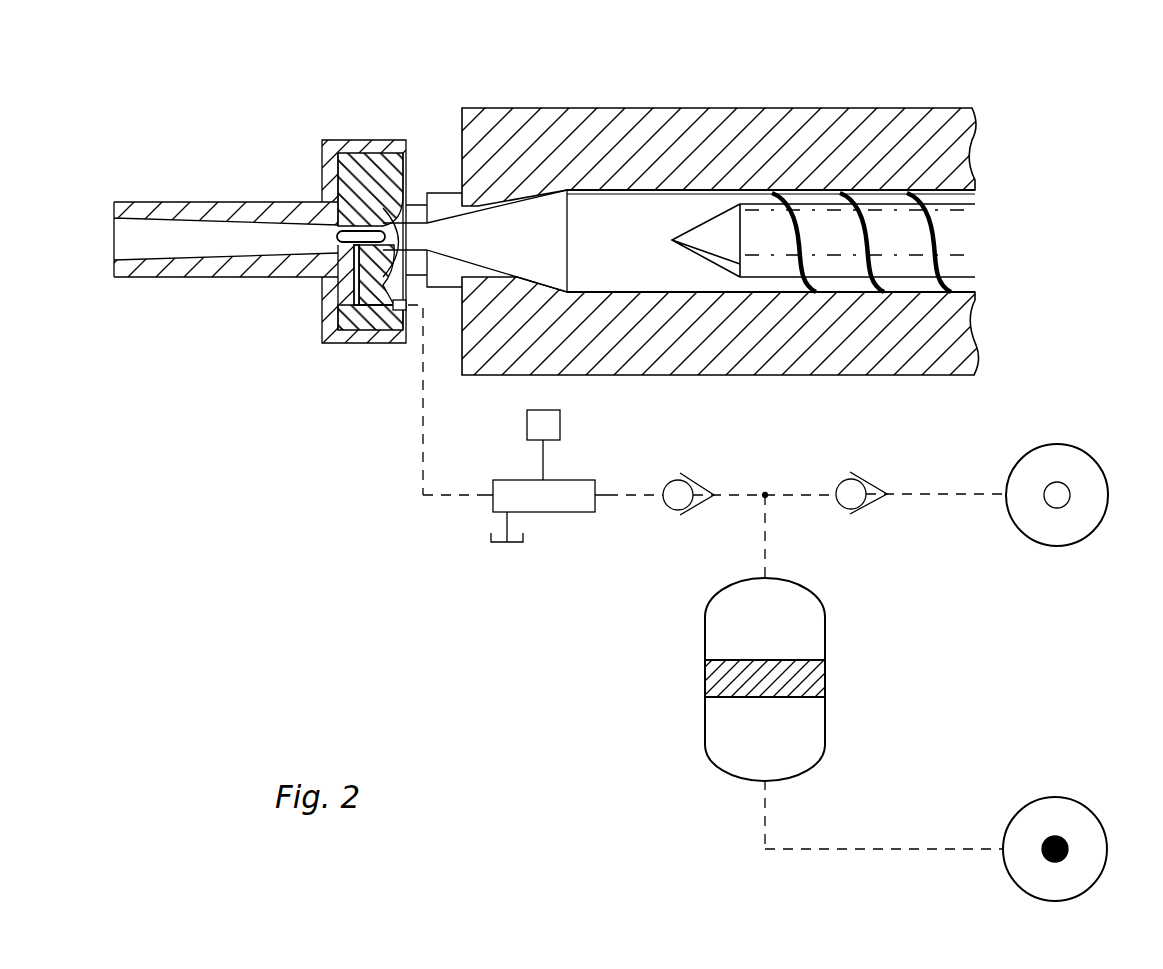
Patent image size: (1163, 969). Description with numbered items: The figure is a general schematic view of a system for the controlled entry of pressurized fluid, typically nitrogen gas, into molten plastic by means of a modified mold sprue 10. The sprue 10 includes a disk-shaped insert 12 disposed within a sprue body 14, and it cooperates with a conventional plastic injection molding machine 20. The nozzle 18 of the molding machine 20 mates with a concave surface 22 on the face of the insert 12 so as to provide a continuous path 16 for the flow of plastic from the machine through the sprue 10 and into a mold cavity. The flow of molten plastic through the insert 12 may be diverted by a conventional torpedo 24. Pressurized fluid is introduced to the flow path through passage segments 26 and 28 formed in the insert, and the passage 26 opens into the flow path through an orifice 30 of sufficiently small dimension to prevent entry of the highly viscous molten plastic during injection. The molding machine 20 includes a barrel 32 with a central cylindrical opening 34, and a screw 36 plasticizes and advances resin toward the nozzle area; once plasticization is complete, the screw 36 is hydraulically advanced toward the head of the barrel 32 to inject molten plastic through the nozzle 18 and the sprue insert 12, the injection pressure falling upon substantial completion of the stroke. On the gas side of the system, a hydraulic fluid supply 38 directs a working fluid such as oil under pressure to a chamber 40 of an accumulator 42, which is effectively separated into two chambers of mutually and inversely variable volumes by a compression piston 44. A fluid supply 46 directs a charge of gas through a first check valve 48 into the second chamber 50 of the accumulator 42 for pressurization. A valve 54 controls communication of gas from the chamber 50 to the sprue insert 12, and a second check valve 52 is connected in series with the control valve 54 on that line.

The mold sprue 10 is at (362, 92).
The insert 12 is at (407, 153).
The sprue body 14 is at (322, 148).
The continuous path 16 is at (233, 240).
The nozzle 18 is at (412, 207).
The plastic injection molding machine 20 is at (720, 82).
The concave surface 22 is at (408, 190).
The torpedo 24 is at (430, 238).
The passage segment 26 is at (342, 298).
The passage segment 28 is at (413, 318).
The orifice 30 is at (337, 232).
The barrel 32 is at (810, 107).
The central cylindrical opening 34 is at (605, 215).
The screw 36 is at (980, 254).
The hydraulic fluid supply 38 is at (1092, 816).
The chamber 40 is at (810, 735).
The accumulator 42 is at (825, 700).
The compression piston 44 is at (810, 660).
The fluid supply 46 is at (1080, 450).
The first check valve 48 is at (840, 482).
The second chamber 50 is at (800, 596).
The second check valve 52 is at (668, 482).
The valve 54 is at (560, 480).